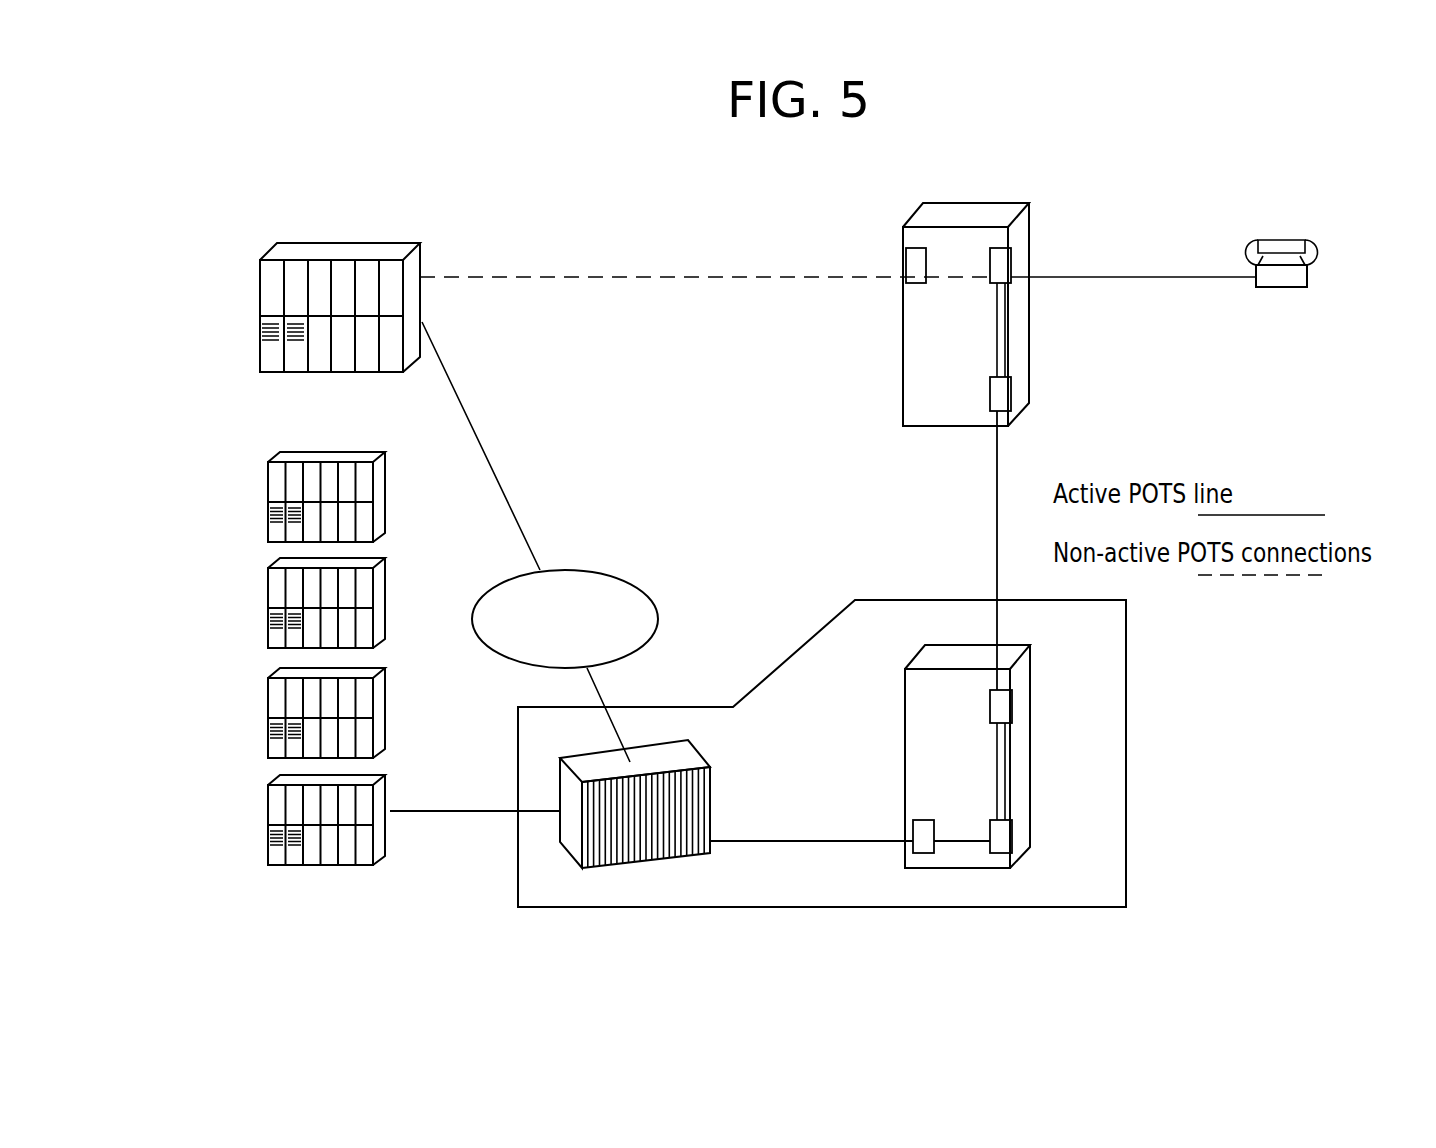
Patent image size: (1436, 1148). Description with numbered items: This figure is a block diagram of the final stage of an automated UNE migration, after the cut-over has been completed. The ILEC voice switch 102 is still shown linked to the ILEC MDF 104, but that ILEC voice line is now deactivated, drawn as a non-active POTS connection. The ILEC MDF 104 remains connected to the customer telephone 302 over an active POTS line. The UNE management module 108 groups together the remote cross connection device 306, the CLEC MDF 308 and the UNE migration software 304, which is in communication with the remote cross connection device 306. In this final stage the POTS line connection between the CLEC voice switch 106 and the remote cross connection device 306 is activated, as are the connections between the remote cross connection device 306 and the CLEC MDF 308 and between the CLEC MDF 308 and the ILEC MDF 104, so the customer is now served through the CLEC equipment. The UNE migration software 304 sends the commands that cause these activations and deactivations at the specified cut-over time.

The ILEC voice switch 102 is at (260, 305).
The ILEC MDF 104 is at (1030, 241).
The CLEC voice switch 106 is at (270, 613).
The UNE management module 108 is at (1126, 753).
The customer telephone 302 is at (1308, 270).
The UNE migration software 304 is at (658, 619).
The remote cross connection device 306 is at (677, 768).
The CLEC MDF 308 is at (1030, 752).